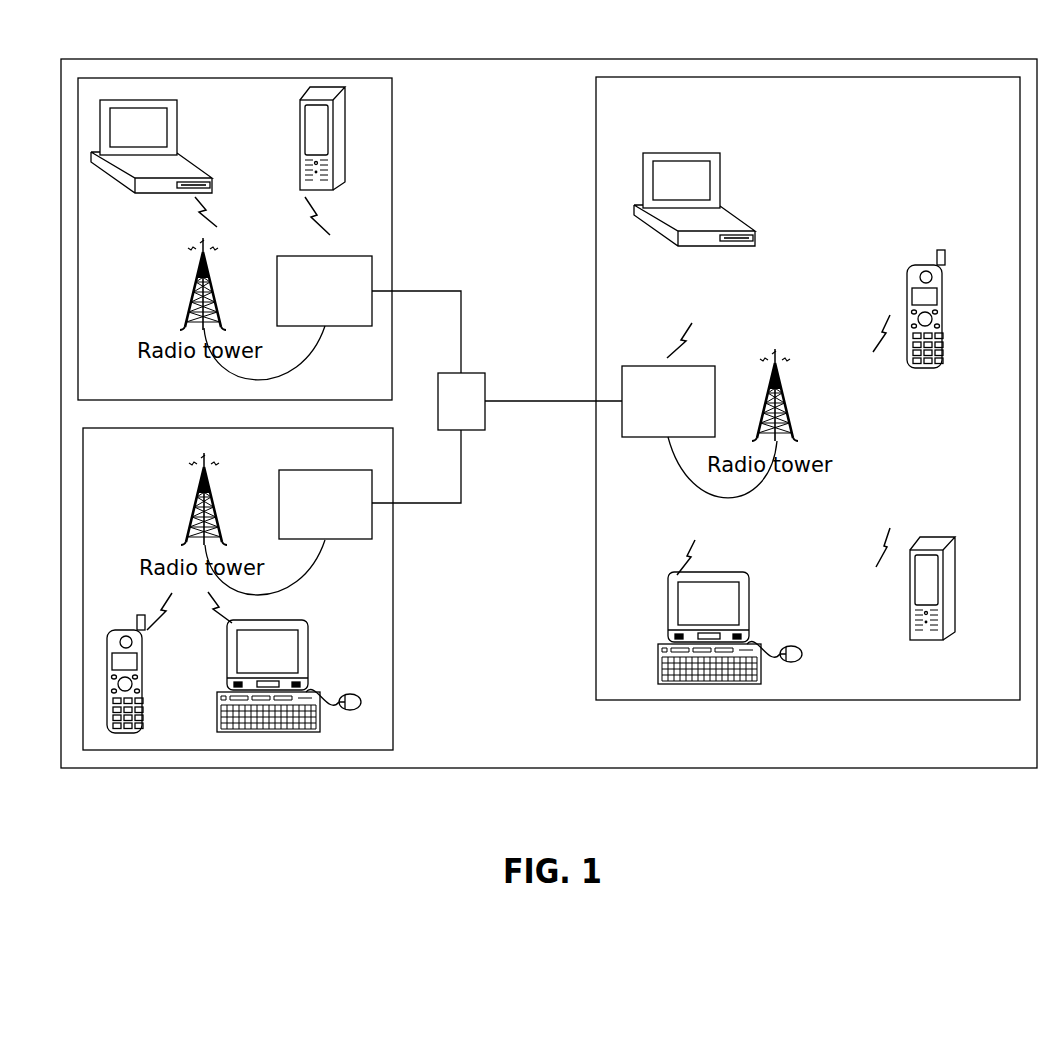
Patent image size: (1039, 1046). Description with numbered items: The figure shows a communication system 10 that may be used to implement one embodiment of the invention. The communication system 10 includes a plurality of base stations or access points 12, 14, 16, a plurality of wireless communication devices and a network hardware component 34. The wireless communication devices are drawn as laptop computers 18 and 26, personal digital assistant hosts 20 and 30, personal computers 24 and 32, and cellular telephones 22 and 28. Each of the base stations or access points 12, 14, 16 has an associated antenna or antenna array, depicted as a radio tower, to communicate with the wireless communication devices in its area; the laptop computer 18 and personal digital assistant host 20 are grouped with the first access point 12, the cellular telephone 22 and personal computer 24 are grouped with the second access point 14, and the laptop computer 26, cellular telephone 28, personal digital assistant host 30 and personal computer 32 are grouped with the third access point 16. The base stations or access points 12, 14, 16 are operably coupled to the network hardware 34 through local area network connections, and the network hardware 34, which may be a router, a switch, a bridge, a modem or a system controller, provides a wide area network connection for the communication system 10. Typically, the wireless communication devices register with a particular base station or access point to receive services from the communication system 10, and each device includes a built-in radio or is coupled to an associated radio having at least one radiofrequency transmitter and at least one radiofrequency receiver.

The communication system 10 is at (549, 413).
The base station or access point 12 is at (324, 291).
The base station or access point 14 is at (325, 504).
The base station or access point 16 is at (668, 401).
The laptop computer 18 is at (169, 146).
The personal digital assistant host 20 is at (339, 138).
The cellular telephone 22 is at (143, 674).
The personal computer 24 is at (299, 676).
The laptop computer 26 is at (711, 199).
The cellular telephone 28 is at (948, 309).
The personal digital assistant host 30 is at (951, 588).
The personal computer 32 is at (740, 628).
The network hardware component 34 is at (461, 401).